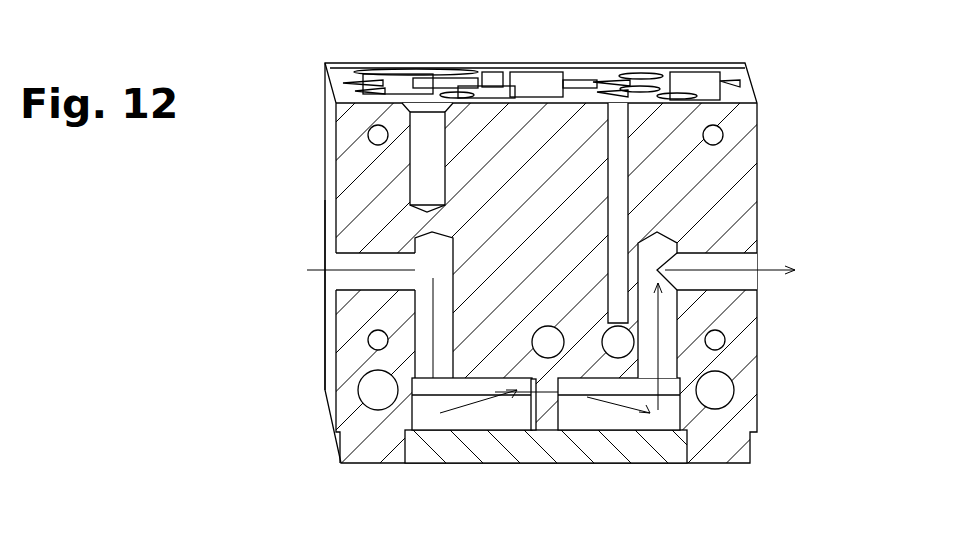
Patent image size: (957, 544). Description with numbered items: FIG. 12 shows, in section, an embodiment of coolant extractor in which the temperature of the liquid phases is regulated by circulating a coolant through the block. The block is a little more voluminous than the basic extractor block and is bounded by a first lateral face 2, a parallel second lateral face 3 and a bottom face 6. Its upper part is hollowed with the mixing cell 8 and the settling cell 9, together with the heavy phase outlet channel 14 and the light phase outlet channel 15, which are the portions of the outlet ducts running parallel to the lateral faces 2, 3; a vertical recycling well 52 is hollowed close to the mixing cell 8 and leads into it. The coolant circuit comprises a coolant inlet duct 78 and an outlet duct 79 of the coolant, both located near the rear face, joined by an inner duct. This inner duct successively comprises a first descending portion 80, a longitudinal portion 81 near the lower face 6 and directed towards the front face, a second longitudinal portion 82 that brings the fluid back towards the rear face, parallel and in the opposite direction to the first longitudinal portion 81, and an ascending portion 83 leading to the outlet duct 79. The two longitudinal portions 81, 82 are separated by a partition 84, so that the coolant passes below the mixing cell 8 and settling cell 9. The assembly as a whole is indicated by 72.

The first lateral face 2 is at (757, 157).
The second lateral face 3 is at (325, 168).
The bottom face 6 is at (637, 465).
The mixing cell 8 is at (505, 93).
The settling cell 9 is at (545, 72).
The heavy phase outlet channel 14 is at (387, 80).
The light phase outlet channel 15 is at (690, 88).
The vertical recycling well 52 is at (620, 195).
The valve block assembly 72 is at (599, 263).
The coolant inlet duct 78 is at (325, 293).
The outlet duct of the coolant 79 is at (757, 262).
The first descending portion 80 is at (427, 363).
The longitudinal portion 81 is at (472, 417).
The second longitudinal portion 82 is at (602, 415).
The ascending portion 83 is at (668, 343).
The partition 84 is at (548, 413).